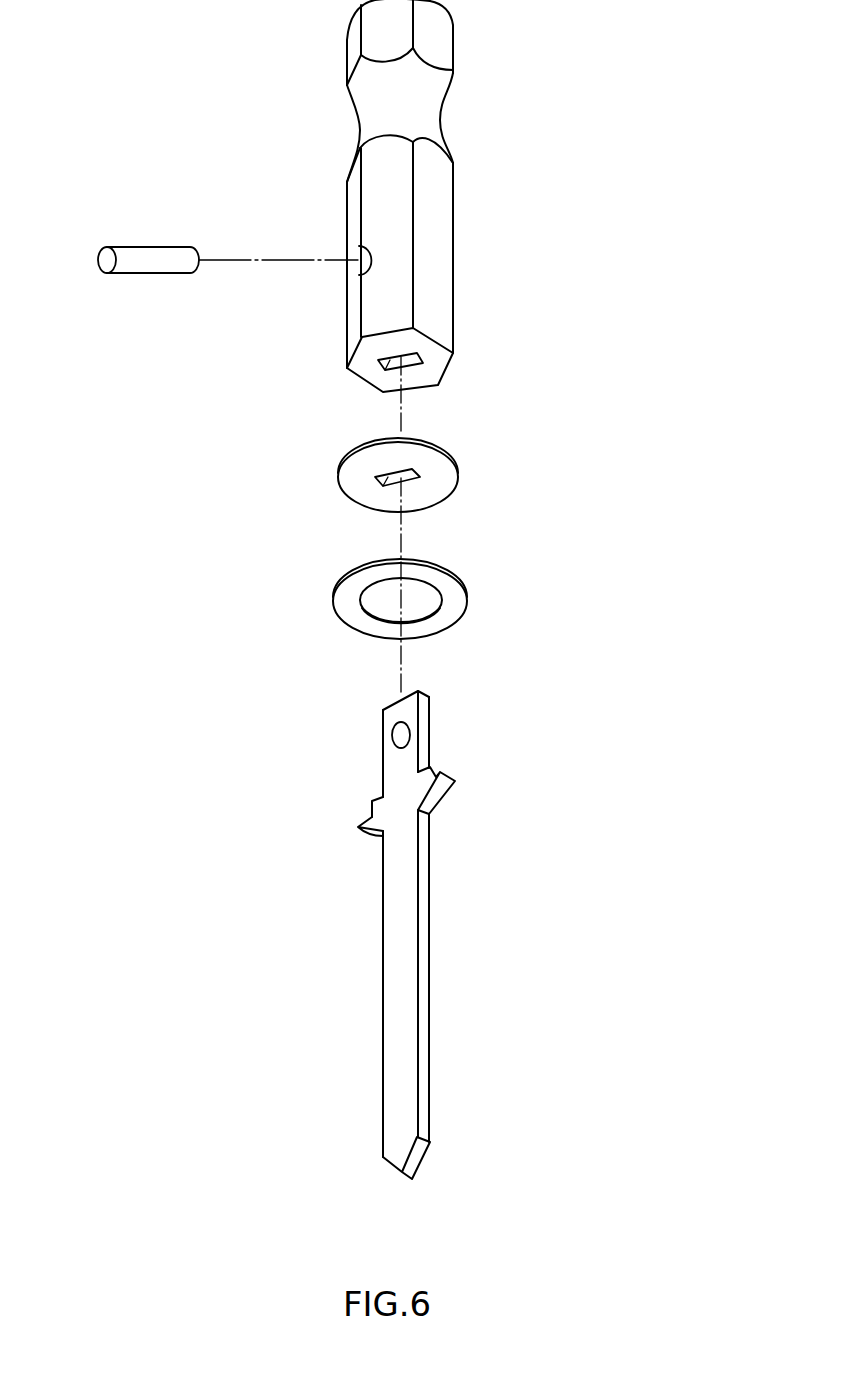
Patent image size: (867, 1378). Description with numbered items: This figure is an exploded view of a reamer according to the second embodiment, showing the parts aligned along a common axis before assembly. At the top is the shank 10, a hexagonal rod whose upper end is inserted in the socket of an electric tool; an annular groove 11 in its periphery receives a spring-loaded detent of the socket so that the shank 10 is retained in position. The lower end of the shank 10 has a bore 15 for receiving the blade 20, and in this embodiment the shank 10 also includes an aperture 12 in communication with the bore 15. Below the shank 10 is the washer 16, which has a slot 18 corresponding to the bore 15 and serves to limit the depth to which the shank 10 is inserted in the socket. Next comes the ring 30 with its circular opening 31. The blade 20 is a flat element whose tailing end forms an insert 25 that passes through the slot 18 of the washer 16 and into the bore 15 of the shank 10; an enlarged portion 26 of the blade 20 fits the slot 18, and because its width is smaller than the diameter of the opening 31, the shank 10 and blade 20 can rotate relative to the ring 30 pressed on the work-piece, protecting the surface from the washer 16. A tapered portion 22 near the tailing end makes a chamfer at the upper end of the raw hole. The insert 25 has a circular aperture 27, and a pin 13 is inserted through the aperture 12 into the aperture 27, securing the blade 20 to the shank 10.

The shank 10 is at (445, 257).
The annular groove 11 is at (440, 116).
The aperture 12 is at (355, 248).
The pin 13 is at (150, 246).
The bore 15 is at (403, 369).
The washer 16 is at (460, 478).
The slot 18 is at (392, 472).
The ring 30 is at (458, 605).
The opening 31 is at (375, 610).
The blade 20 is at (400, 975).
The tapered portion 22 is at (368, 830).
The insert 25 is at (408, 757).
The enlarged portion 26 is at (372, 800).
The aperture 27 is at (392, 735).